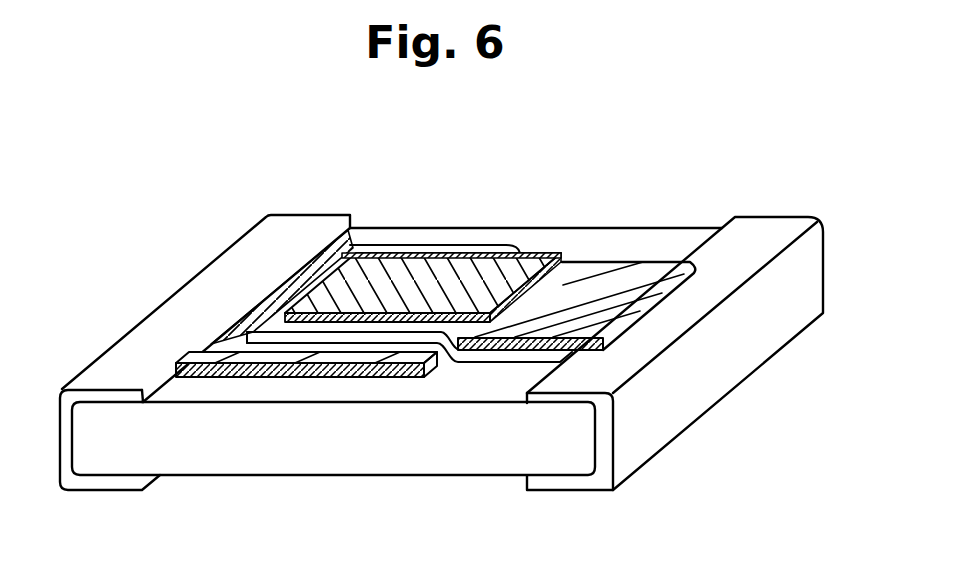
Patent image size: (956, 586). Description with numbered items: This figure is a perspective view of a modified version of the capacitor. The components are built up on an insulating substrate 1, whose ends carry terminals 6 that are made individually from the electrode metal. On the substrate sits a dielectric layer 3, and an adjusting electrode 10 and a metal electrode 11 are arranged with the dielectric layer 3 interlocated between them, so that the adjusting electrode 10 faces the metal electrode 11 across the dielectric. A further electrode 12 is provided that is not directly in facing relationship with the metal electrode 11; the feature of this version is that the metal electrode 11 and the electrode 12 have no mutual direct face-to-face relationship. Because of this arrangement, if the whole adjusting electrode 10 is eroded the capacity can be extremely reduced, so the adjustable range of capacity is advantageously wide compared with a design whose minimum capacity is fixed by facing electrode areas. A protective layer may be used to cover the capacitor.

The insulating substrate 1 is at (108, 435).
The dielectric layer 3 is at (281, 320).
The terminal 6 is at (703, 319).
The adjusting electrode 10 is at (429, 282).
The metal electrode 11 is at (599, 285).
The another electrode 12 is at (247, 313).